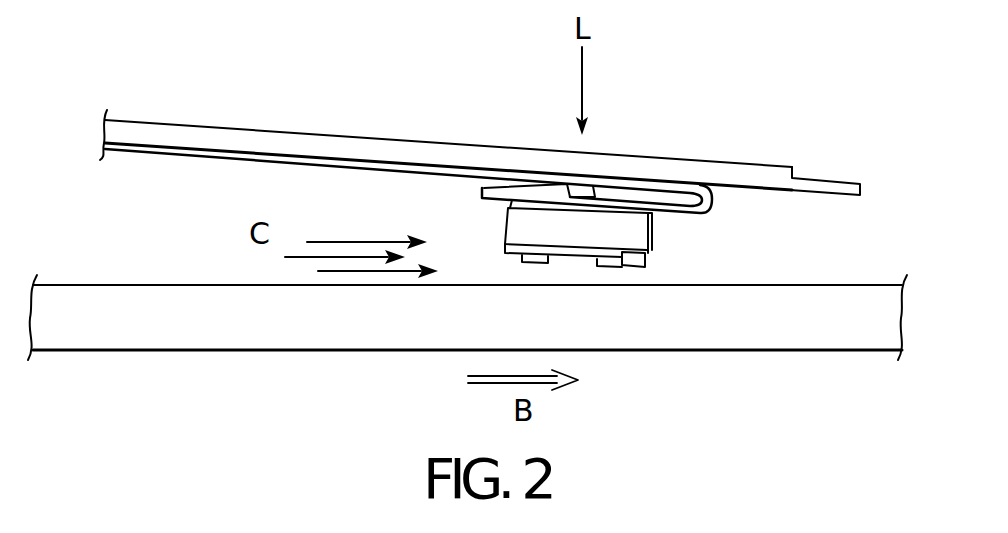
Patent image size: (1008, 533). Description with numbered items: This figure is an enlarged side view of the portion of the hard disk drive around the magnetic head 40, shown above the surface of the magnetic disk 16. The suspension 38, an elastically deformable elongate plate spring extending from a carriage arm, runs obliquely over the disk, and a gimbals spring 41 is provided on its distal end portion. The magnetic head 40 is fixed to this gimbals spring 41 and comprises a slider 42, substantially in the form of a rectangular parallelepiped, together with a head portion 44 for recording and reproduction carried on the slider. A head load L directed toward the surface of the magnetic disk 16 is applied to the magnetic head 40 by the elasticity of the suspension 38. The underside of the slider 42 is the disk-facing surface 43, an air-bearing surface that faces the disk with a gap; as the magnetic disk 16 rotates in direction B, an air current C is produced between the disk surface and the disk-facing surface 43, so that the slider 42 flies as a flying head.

The magnetic disk 16 is at (281, 341).
The suspension 38 is at (293, 135).
The magnetic head 40 is at (466, 226).
The gimbals spring 41 is at (492, 190).
The slider 42 is at (612, 223).
The disk-facing surface 43 is at (574, 282).
The head portion 44 is at (633, 240).